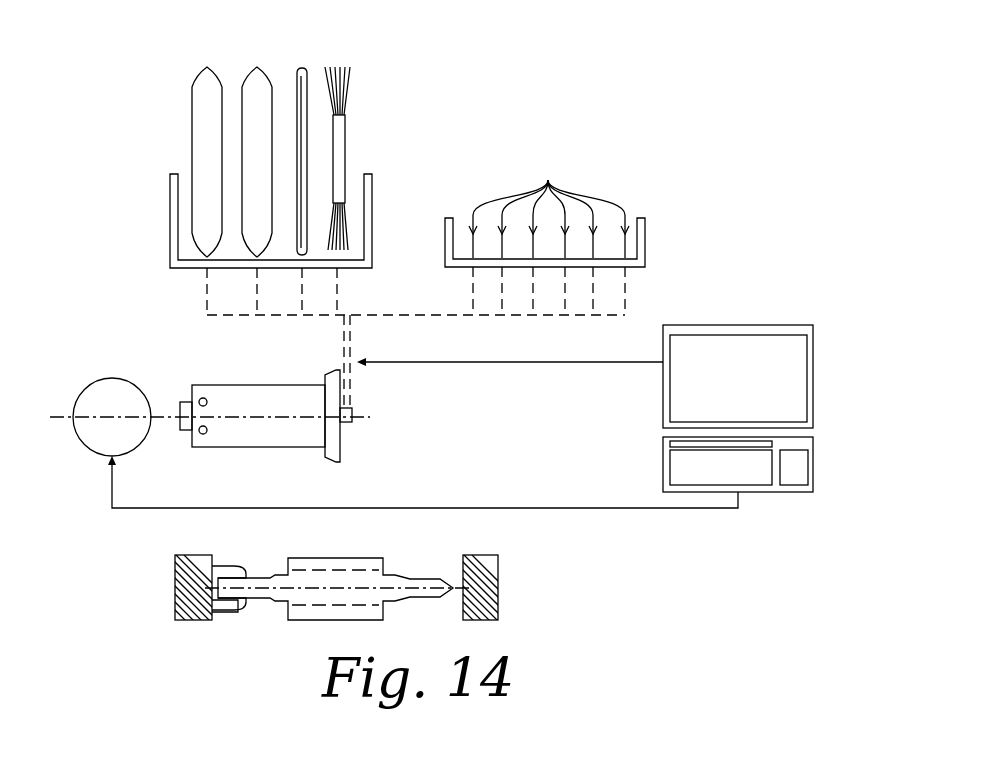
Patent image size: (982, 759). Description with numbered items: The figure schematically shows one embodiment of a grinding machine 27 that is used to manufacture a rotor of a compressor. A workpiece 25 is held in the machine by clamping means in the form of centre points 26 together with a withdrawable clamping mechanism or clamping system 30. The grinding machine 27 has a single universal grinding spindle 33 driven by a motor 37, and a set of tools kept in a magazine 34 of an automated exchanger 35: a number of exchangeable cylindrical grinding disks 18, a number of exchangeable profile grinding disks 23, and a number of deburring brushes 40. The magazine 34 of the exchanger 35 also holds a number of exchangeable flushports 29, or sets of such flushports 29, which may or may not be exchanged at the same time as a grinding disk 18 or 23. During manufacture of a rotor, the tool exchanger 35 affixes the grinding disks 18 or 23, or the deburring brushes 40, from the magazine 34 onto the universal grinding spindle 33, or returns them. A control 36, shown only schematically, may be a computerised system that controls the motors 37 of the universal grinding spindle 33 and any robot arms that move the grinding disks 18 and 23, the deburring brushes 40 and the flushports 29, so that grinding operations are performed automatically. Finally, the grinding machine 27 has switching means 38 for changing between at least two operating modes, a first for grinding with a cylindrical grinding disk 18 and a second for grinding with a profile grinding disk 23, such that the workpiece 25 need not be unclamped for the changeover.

The cylindrical grinding disk 18 is at (302, 68).
The profile grinding disk 23 is at (207, 67).
The workpiece 25 is at (351, 538).
The centre points 26 is at (225, 572).
The grinding machine 27 is at (707, 118).
The flushports 29 is at (548, 180).
The clamping system 30 is at (222, 612).
The universal grinding spindle 33 is at (355, 414).
The magazine 34 is at (645, 226).
The automated exchanger 35 is at (160, 210).
The control 36 is at (725, 524).
The motor 37 is at (115, 397).
The switching means 38 is at (640, 295).
The deburring brushes 40 is at (339, 67).